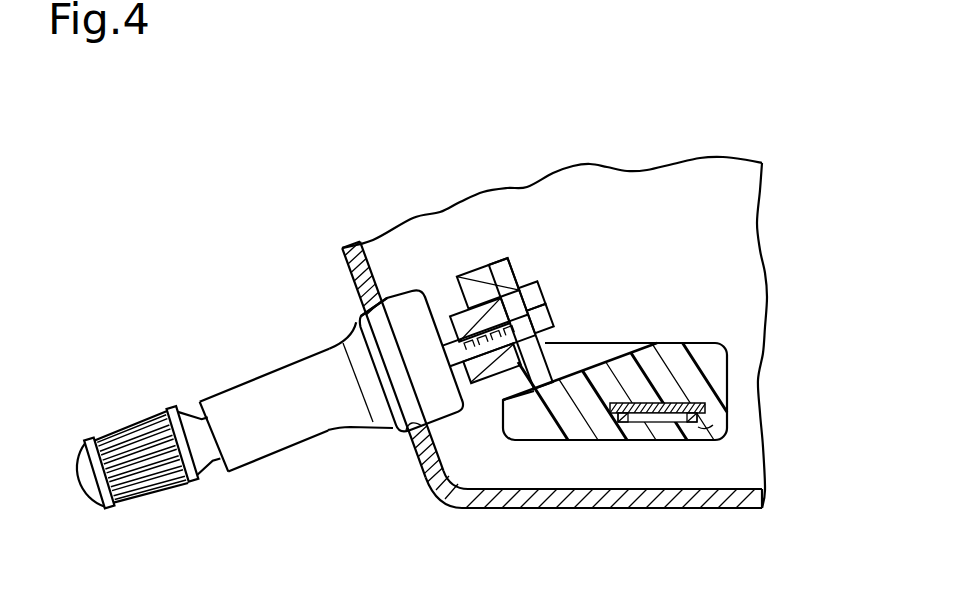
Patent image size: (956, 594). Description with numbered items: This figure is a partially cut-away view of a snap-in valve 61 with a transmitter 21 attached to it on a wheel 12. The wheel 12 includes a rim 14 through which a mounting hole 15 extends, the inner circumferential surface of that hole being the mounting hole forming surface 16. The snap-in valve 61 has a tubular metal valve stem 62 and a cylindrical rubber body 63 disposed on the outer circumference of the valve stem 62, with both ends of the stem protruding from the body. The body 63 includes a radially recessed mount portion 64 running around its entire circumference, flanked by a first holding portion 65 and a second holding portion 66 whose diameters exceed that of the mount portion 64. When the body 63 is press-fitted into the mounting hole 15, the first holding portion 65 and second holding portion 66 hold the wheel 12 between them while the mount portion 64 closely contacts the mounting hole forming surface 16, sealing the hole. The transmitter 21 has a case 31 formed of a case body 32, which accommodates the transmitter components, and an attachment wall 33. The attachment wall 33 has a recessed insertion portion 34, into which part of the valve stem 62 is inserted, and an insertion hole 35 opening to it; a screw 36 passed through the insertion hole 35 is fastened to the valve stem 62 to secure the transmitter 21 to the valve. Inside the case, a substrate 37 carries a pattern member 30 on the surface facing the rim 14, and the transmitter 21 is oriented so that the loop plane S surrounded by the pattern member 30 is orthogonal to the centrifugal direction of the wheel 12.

The wheel 12 is at (768, 498).
The rim 14 is at (735, 508).
The mounting hole 15 is at (379, 330).
The mounting hole forming surface 16 is at (406, 430).
The transmitter 21 is at (724, 346).
The pattern member 30 is at (712, 410).
The case 31 is at (557, 440).
The case body 32 is at (578, 440).
The attachment wall 33 is at (505, 260).
The insertion portion 34 is at (482, 278).
The insertion hole 35 is at (547, 312).
The screw 36 is at (537, 283).
The substrate 37 is at (663, 399).
The snap-in valve 61 is at (288, 456).
The valve stem 62 is at (474, 384).
The body 63 is at (332, 430).
The mount portion 64 is at (392, 378).
The first holding portion 65 is at (358, 313).
The second holding portion 66 is at (405, 302).
The loop plane S is at (713, 424).